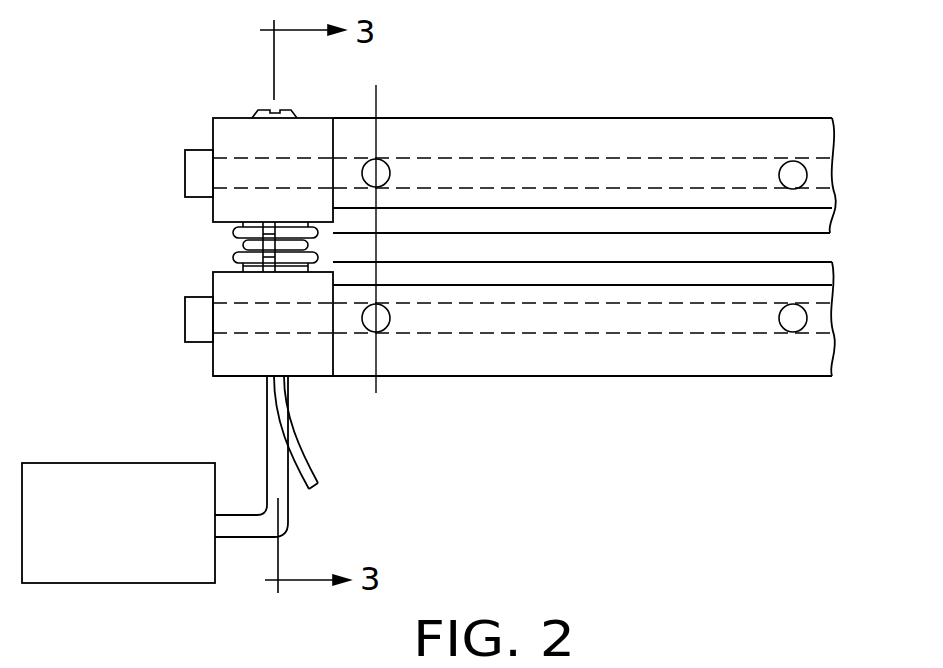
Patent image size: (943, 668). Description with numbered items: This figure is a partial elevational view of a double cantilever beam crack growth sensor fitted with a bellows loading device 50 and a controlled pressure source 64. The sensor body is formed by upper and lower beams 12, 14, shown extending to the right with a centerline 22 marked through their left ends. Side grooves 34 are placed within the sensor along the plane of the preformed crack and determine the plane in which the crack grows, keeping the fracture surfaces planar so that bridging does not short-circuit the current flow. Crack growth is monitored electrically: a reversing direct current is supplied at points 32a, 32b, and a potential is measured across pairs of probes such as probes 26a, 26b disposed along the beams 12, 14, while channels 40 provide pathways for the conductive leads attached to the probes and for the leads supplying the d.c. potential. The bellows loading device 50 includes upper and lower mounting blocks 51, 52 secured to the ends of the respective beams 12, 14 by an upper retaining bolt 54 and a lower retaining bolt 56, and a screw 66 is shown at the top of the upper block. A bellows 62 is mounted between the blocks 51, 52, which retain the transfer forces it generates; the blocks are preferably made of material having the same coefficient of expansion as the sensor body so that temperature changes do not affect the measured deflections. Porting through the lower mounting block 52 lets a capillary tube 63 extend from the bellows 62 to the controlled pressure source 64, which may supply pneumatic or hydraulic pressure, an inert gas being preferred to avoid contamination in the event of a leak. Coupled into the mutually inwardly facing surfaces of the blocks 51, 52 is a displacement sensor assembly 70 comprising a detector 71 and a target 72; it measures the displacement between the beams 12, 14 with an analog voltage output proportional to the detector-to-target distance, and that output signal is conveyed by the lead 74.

The beam 12 is at (570, 132).
The beam 14 is at (628, 363).
The center line 22 is at (378, 100).
The probe 26a is at (790, 168).
The probe 26b is at (790, 326).
The current supply point 32a is at (387, 170).
The current supply point 32b is at (387, 322).
The side grooves 34 is at (808, 268).
The channels 40 is at (836, 169).
The bellows loading device 50 is at (182, 92).
The upper mounting block 51 is at (213, 127).
The lower mounting block 52 is at (213, 363).
The upper retaining bolt 54 is at (185, 163).
The lower retaining bolt 56 is at (185, 320).
The bellows 62 is at (235, 232).
The capillary tube 63 is at (248, 537).
The controlled pressure source 64 is at (145, 462).
The fastening screw 66 is at (263, 108).
The displacement sensor assembly 70 is at (210, 255).
The detector 71 is at (268, 272).
The target 72 is at (268, 222).
The lead 74 is at (305, 462).